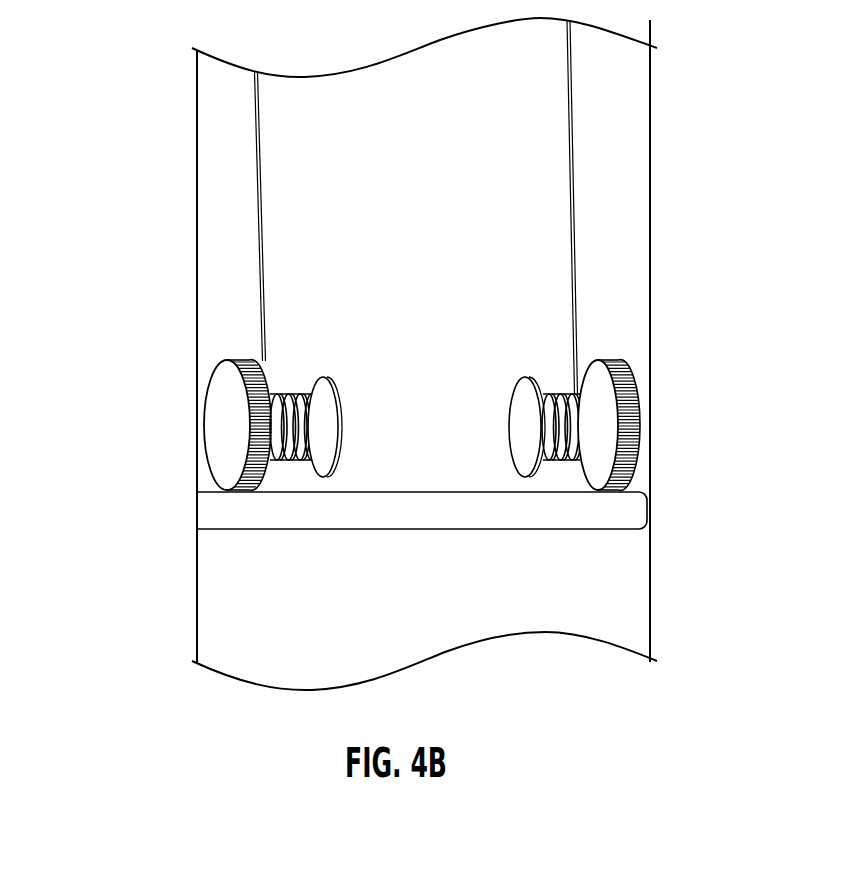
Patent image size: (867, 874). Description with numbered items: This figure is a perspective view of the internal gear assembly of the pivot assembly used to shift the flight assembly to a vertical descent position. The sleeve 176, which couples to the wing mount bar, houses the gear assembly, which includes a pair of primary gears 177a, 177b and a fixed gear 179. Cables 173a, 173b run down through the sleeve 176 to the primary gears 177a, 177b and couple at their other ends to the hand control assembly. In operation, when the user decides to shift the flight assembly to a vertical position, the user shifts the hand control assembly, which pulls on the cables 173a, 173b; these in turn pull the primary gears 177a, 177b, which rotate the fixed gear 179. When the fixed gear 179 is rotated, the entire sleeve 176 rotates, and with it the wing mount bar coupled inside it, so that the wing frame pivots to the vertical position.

The sleeve 176 is at (130, 113).
The cable 173a is at (263, 185).
The cable 173b is at (572, 185).
The primary gear 177a is at (223, 415).
The primary gear 177b is at (620, 362).
The fixed gear 179 is at (442, 524).